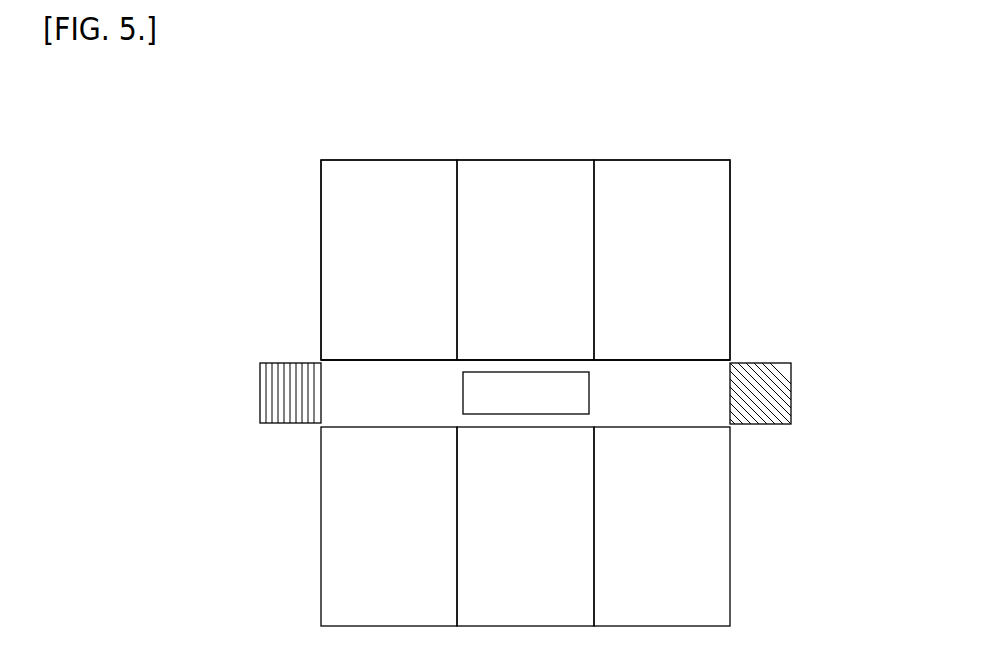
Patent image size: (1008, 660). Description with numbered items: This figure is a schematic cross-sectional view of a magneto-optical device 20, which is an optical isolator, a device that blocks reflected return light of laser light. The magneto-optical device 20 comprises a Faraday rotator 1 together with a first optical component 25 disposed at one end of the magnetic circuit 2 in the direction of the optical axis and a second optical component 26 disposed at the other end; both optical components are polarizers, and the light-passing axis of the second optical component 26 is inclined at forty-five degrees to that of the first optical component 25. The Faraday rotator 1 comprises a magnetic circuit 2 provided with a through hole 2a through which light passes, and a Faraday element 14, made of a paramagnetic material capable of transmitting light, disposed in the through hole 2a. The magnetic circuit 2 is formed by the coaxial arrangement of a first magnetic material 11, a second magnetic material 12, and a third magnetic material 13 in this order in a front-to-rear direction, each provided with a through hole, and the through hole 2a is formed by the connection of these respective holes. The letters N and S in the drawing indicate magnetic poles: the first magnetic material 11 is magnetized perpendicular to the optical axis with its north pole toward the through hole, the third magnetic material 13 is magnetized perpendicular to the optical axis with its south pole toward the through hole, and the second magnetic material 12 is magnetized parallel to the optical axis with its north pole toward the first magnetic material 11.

The magneto-optical device 20 is at (529, 341).
The Faraday rotator 1 is at (457, 351).
The magnetic circuit 2 is at (457, 260).
The through hole 2a is at (353, 359).
The first magnetic material 11 is at (384, 160).
The second magnetic material 12 is at (519, 160).
The third magnetic material 13 is at (656, 160).
The Faraday element 14 is at (592, 373).
The first optical component 25 is at (260, 395).
The second optical component 26 is at (791, 395).